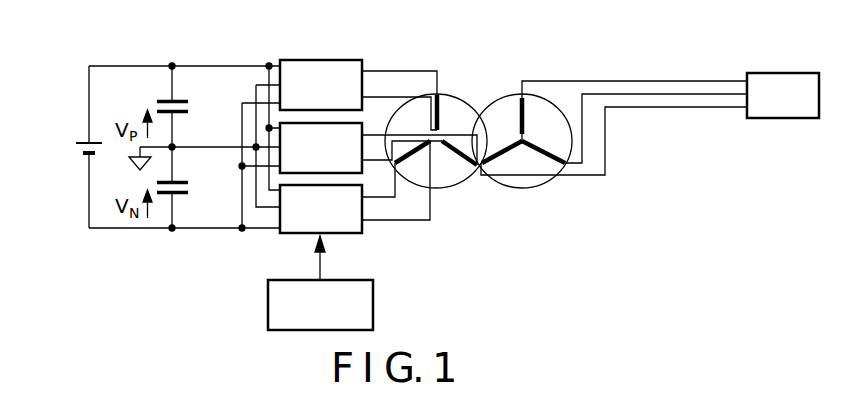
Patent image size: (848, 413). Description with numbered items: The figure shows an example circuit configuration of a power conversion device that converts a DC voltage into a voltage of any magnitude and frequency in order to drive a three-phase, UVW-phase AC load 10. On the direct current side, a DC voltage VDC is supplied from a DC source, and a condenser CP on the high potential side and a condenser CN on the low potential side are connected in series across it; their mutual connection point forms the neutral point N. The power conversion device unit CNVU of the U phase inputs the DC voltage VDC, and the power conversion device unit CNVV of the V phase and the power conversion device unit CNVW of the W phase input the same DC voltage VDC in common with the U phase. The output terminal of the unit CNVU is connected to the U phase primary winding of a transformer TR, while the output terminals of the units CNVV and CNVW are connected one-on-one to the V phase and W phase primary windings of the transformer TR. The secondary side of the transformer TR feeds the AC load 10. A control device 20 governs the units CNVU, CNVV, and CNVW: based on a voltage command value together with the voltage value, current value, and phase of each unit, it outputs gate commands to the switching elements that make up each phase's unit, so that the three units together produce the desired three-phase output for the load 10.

The three-phase AC load 10 is at (790, 72).
The control device 20 is at (374, 305).
The transformer TR is at (467, 182).
The condenser on high potential side CP is at (182, 96).
The condenser on low potential side CN is at (182, 178).
The neutral point N is at (174, 146).
The DC voltage VDC is at (75, 145).
The power conversion device unit of U phase CNVU is at (321, 85).
The power conversion device unit of V phase CNVV is at (321, 148).
The power conversion device unit of W phase CNVW is at (321, 209).